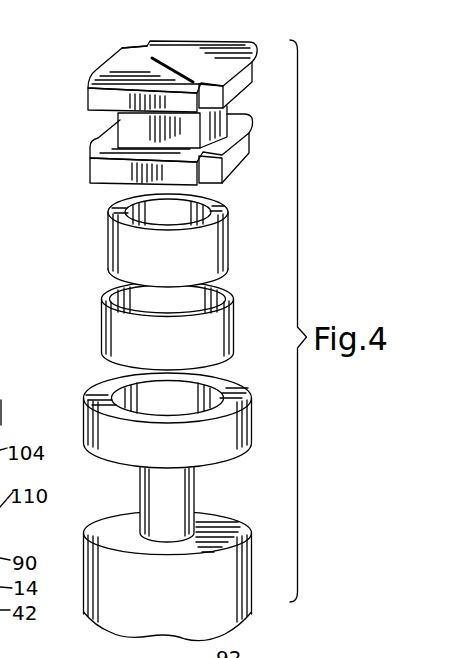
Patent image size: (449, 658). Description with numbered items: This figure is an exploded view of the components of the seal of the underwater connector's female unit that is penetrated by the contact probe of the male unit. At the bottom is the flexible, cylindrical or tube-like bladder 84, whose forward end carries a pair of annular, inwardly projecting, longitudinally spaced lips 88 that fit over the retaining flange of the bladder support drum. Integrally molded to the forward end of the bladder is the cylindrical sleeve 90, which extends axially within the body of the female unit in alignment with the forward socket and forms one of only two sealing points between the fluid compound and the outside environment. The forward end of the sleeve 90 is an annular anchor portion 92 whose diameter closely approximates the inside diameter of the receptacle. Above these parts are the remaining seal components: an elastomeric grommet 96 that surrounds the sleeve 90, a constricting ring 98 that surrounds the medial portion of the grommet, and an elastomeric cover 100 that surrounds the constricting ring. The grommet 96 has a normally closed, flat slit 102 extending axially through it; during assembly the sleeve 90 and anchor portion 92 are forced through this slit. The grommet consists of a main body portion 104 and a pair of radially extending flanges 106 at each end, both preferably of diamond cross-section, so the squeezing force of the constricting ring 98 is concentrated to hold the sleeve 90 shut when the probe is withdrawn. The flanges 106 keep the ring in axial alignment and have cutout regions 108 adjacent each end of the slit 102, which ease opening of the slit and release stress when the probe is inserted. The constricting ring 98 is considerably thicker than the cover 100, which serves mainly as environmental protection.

The bladder 84 is at (237, 572).
The lips 88 is at (230, 527).
The cylindrical sleeve 90 is at (175, 497).
The annular anchor portion 92 is at (238, 392).
The elastomeric grommet 96 is at (154, 106).
The constricting ring 98 is at (217, 242).
The elastomeric cover 100 is at (223, 318).
The slit 102 is at (154, 62).
The main body portion 104 is at (123, 120).
The flanges 106 is at (97, 103).
The cutout regions 108 is at (118, 46).